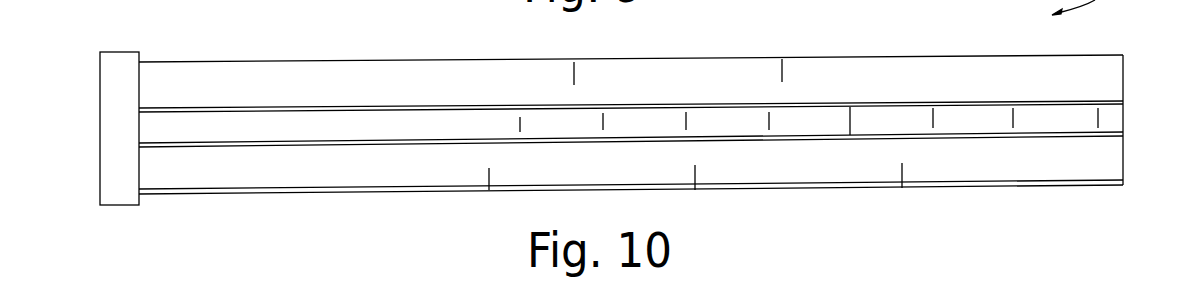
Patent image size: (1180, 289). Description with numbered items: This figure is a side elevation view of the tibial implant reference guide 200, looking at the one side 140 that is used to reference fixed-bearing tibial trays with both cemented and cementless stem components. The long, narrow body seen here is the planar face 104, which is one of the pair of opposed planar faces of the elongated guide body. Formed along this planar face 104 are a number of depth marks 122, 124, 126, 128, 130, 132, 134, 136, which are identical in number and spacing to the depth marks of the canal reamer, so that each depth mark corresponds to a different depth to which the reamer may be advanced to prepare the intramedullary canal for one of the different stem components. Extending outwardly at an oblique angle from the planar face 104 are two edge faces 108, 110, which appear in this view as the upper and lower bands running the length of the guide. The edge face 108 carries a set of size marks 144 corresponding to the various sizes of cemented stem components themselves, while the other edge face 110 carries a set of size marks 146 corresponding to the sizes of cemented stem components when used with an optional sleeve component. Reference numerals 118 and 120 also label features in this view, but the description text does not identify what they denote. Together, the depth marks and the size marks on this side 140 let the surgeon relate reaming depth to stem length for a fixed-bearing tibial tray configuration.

In FIG. 10, the planar face 104 is at (435, 125).
In FIG. 10, the edge face 108 is at (378, 77).
In FIG. 10, the edge face 110 is at (377, 178).
In FIG. 10, the lower bar of chart 118 is at (140, 188).
In FIG. 10, the fixed bearing with stems label 120 is at (117, 60).
In FIG. 10, the depth mark 122 is at (517, 114).
In FIG. 10, the depth mark 124 is at (603, 113).
In FIG. 10, the depth mark 126 is at (684, 117).
In FIG. 10, the depth mark 128 is at (765, 117).
In FIG. 10, the depth mark 130 is at (848, 117).
In FIG. 10, the depth mark 132 is at (930, 115).
In FIG. 10, the depth mark 134 is at (1010, 115).
In FIG. 10, the depth mark 136 is at (1094, 115).
In FIG. 10, the side 140 is at (408, 70).
In FIG. 10, the size marks 144 is at (578, 72).
In FIG. 10, the size marks 146 is at (497, 186).
In FIG. 11, the tibial implant reference guide 200 is at (1085, 288).